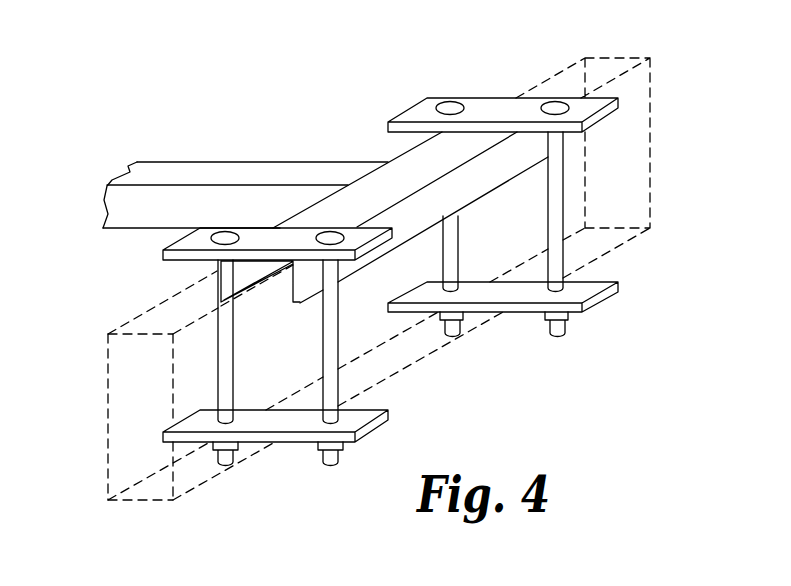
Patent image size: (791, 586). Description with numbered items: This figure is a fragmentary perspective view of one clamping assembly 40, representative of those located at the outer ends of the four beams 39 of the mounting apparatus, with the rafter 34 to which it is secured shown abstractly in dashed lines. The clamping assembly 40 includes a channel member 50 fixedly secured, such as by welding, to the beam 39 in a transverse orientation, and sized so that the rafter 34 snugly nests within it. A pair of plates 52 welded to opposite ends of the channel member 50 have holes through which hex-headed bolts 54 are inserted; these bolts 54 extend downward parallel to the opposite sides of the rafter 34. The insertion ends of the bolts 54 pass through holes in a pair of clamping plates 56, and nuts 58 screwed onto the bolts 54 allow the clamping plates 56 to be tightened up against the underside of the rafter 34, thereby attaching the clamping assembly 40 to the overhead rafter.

The rafter 34 is at (142, 362).
The beam 39 is at (180, 170).
The clamping assembly 40 is at (642, 292).
The channel member 50 is at (375, 190).
The plates 52 is at (487, 110).
The hex-headed bolts 54 is at (548, 178).
The clamping plates 56 is at (523, 313).
The nuts 58 is at (470, 322).